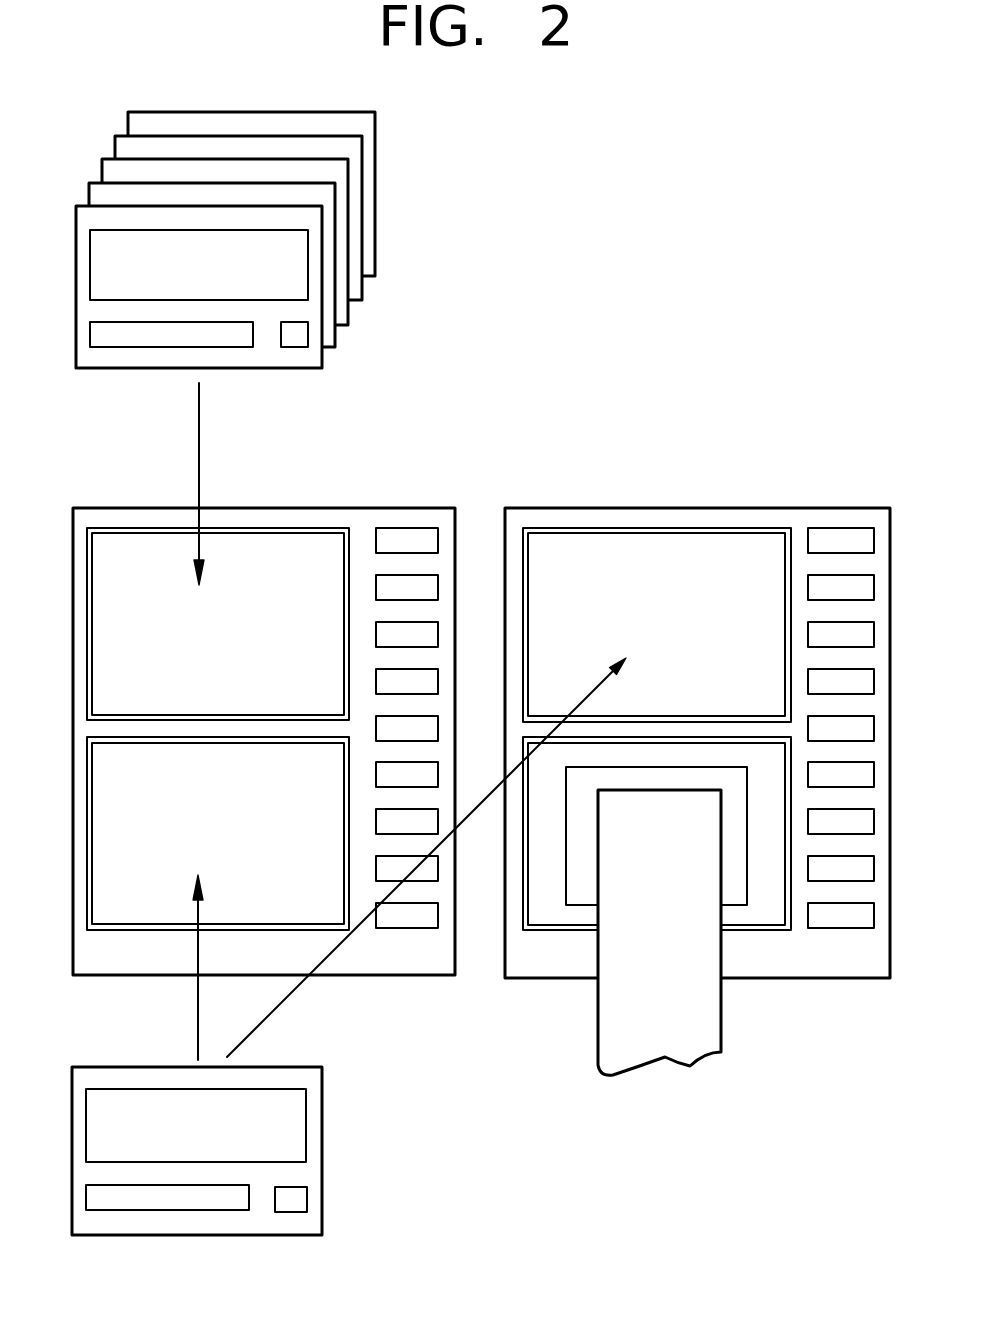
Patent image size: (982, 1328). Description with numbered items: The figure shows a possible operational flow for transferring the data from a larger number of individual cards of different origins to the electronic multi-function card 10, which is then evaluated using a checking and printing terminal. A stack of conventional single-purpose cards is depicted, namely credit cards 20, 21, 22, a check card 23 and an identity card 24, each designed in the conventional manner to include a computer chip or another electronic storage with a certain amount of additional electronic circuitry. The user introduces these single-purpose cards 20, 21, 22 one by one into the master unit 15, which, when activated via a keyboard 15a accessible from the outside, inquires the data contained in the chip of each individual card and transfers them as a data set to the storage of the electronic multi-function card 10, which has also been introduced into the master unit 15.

The electronic multi-function card 10 is at (203, 1225).
The master unit 15 is at (89, 518).
The selection keys 15a is at (432, 588).
The credit card 20 is at (317, 365).
The credit card 21 is at (330, 340).
The credit card 22 is at (342, 313).
The check card 23 is at (353, 287).
The identity card 24 is at (370, 241).